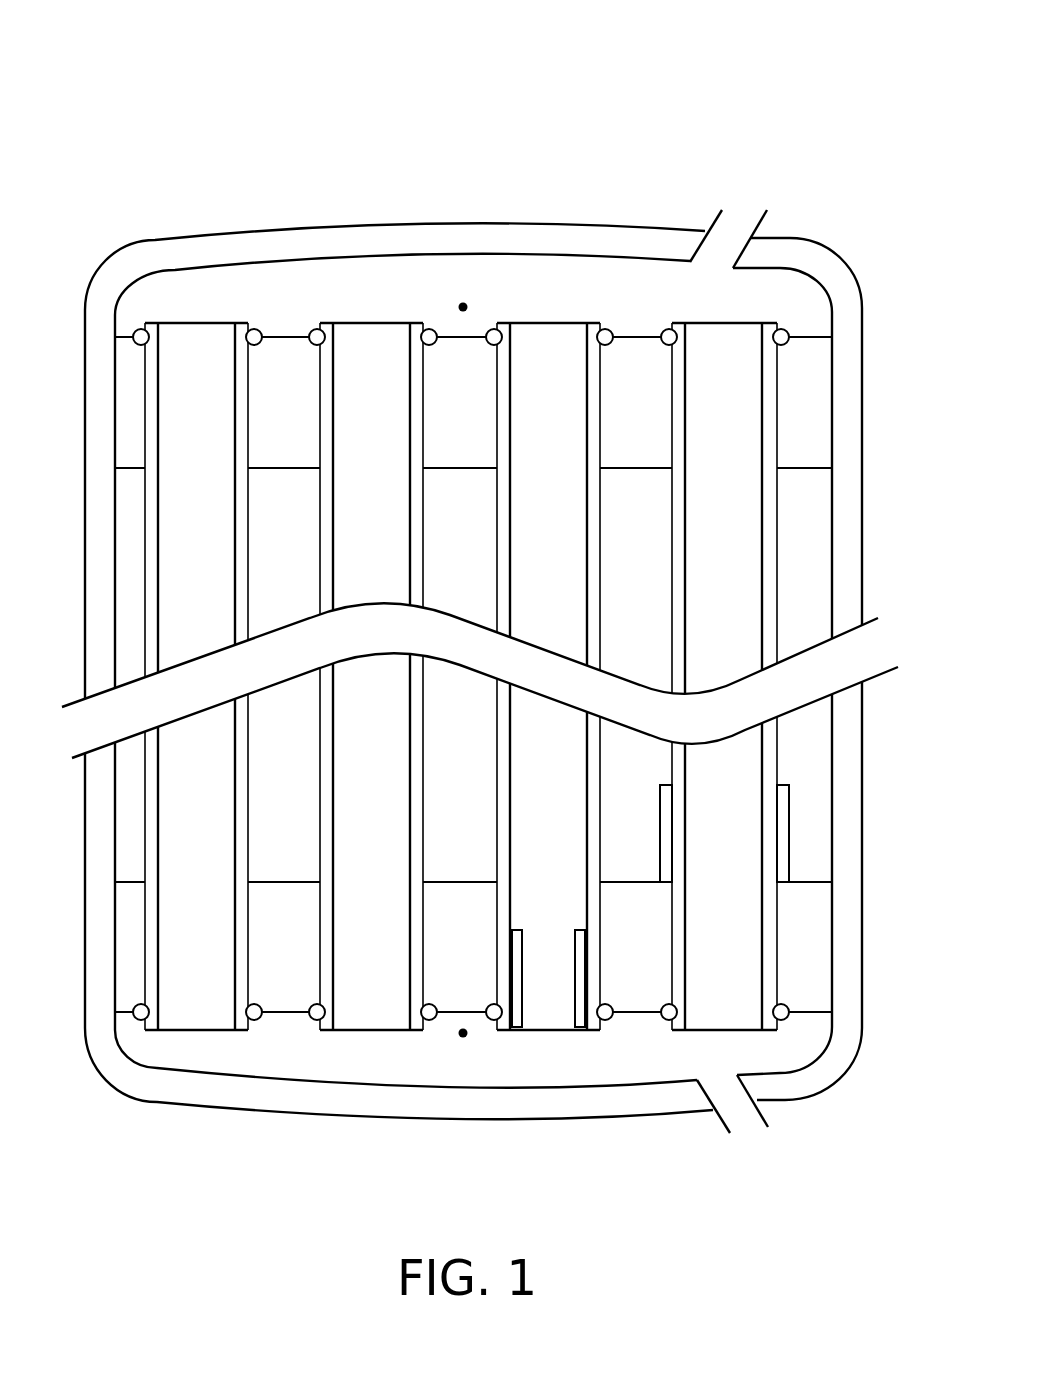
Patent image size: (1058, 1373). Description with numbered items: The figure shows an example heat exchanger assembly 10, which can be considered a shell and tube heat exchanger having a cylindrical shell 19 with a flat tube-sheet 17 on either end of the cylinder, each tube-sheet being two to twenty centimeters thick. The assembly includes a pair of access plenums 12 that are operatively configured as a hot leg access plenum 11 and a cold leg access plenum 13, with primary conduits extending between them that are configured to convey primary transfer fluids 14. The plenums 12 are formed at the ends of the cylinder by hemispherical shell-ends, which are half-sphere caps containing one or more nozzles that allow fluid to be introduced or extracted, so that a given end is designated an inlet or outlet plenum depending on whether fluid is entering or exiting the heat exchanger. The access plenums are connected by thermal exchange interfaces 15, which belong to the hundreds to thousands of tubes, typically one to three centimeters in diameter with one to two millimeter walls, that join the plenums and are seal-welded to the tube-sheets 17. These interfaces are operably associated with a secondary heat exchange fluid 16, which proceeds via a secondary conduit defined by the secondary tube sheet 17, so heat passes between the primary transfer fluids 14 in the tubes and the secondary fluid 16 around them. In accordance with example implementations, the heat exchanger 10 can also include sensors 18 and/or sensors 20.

The heat exchanger assembly 10 is at (500, 589).
The hot leg access plenum 11 is at (738, 1112).
The access plenums 12 is at (463, 307).
The cold leg access plenum 13 is at (748, 193).
The primary transfer fluids 14 is at (737, 916).
The thermal exchange interfaces 15 is at (675, 612).
The secondary heat exchange fluid 16 is at (652, 552).
The secondary tube sheet 17 is at (628, 367).
The sensors 18 is at (580, 1002).
The cylindrical shell 19 is at (845, 363).
The sensors 20 is at (670, 818).